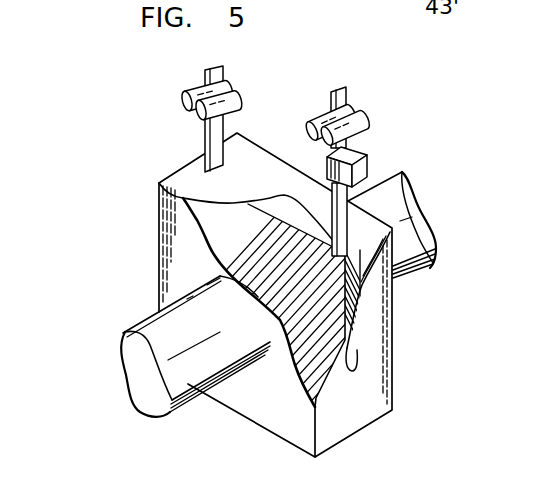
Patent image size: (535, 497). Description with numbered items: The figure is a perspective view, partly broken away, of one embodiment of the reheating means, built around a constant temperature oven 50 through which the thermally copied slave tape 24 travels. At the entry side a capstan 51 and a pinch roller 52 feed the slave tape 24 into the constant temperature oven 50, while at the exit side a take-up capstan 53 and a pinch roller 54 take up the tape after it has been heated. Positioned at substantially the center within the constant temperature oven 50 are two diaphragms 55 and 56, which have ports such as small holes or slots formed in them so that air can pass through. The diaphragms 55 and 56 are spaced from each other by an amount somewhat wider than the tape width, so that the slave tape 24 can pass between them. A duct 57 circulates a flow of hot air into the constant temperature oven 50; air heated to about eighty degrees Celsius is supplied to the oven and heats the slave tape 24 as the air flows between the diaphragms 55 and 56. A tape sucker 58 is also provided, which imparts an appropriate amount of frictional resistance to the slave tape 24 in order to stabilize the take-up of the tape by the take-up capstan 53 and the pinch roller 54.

The thermally copied slave tape 24 is at (217, 130).
The constant temperature oven 50 is at (162, 252).
The capstan 51 is at (183, 103).
The pinch roller 52 is at (197, 114).
The take-up capstan 53 is at (320, 117).
The pinch roller 54 is at (360, 115).
The diaphragm 55 is at (352, 368).
The diaphragm 56 is at (363, 293).
The duct 57 is at (417, 220).
The tape sucker 58 is at (362, 156).